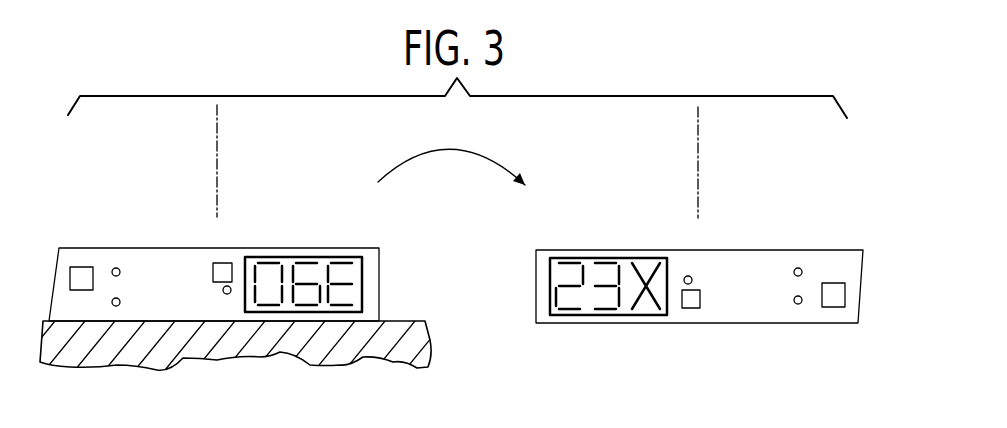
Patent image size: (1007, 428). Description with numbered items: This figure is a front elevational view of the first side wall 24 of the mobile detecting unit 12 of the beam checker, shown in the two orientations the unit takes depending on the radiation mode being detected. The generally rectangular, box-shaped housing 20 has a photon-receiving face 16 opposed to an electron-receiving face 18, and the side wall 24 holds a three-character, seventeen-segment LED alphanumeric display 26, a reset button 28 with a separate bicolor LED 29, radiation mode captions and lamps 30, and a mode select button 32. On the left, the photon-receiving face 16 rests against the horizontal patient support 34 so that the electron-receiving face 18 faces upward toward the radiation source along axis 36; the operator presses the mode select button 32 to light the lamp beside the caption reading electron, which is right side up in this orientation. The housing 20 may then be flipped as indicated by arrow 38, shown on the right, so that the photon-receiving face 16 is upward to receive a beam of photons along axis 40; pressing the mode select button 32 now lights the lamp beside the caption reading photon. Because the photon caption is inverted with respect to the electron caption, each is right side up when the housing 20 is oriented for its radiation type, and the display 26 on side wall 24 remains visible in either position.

The mobile detecting unit 12 is at (456, 287).
The photon-receiving face 16 is at (299, 328).
The electron-receiving face 18 is at (303, 243).
The housing 20 is at (380, 287).
The first side wall 24 is at (220, 310).
The LED alphanumeric display 26 is at (362, 257).
The reset button 28 is at (216, 263).
The bicolor LED 29 is at (228, 286).
The radiation mode captions and lamps 30 is at (118, 298).
The mode select button 32 is at (85, 265).
The horizontal patient support 34 is at (395, 348).
The axis 36 is at (218, 163).
The arrow 38 is at (445, 150).
The axis 40 is at (700, 163).